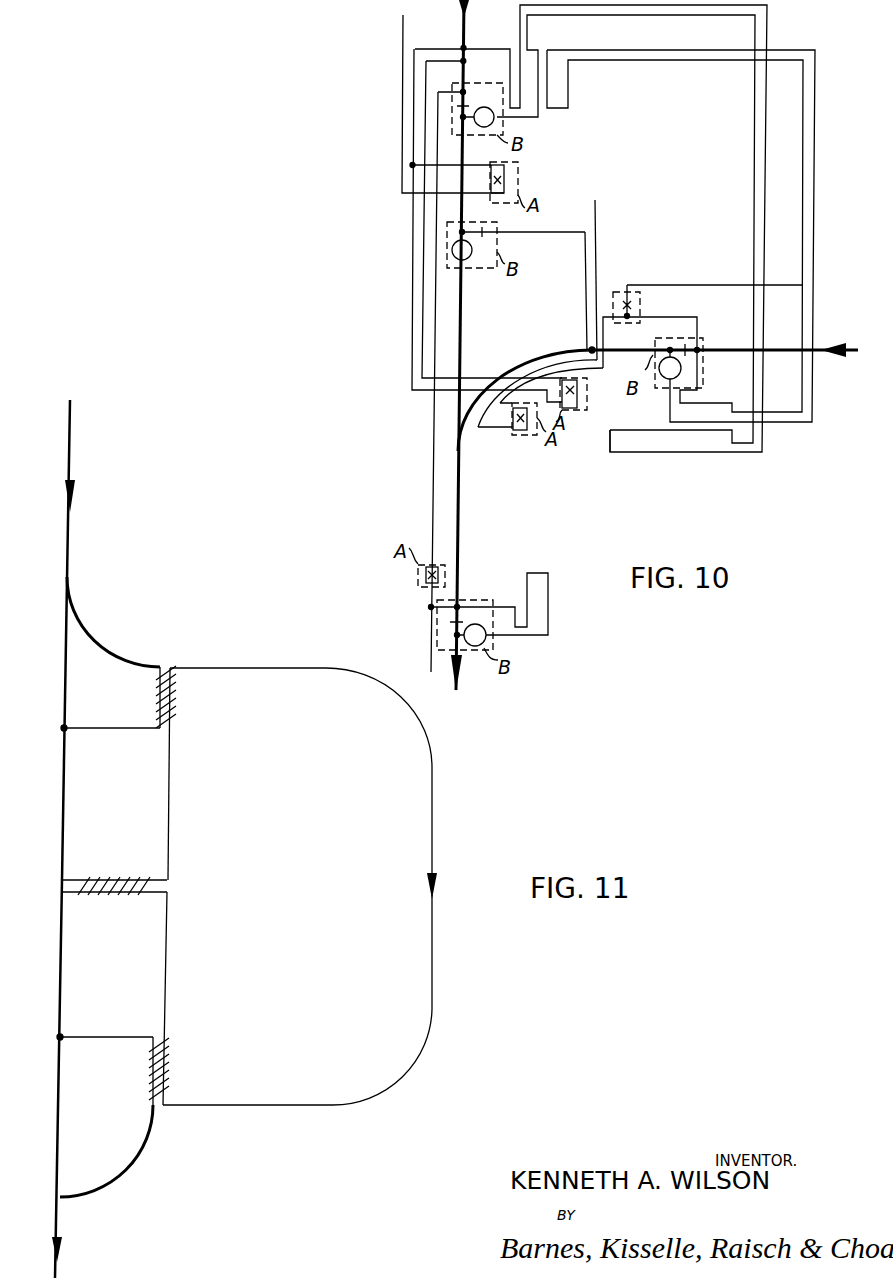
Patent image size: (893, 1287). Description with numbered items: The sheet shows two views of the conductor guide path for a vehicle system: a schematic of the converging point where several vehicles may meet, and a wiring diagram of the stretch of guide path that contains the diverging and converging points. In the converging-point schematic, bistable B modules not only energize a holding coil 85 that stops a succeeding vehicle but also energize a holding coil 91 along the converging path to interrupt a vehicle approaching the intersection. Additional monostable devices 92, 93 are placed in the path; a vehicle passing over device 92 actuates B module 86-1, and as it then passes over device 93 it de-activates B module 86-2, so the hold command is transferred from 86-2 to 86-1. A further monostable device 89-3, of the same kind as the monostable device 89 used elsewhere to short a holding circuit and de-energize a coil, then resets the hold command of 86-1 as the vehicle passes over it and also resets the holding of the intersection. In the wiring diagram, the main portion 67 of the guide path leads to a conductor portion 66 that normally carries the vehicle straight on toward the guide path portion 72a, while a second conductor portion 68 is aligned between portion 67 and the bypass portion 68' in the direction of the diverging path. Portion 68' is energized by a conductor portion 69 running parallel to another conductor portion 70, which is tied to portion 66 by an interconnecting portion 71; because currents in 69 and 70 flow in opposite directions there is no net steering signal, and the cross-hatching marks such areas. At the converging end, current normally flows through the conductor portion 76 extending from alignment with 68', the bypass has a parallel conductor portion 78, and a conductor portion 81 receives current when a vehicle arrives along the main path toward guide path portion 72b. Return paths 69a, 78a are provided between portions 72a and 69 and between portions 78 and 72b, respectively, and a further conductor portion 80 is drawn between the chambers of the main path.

In FIG. 11, the conductor portion 66 is at (65, 670).
In FIG. 11, the main portion of the guide path 67 is at (68, 547).
In FIG. 11, the second conductor portion 68 is at (113, 622).
In FIG. 11, the bypass conductor portion 68' is at (300, 886).
In FIG. 11, the conductor portion 69 is at (168, 698).
In FIG. 11, the return path 69a is at (100, 880).
In FIG. 11, the conductor portion 70 is at (157, 700).
In FIG. 11, the interconnecting portion 71 is at (107, 730).
In FIG. 11, the guide path portion 72a is at (62, 778).
In FIG. 11, the guide path portion 72b is at (62, 930).
In FIG. 11, the guide path conductor portion 76 is at (103, 1127).
In FIG. 11, the conductor portion 78 is at (168, 1063).
In FIG. 11, the return path 78a is at (100, 892).
In FIG. 11, the partition 80 is at (100, 1037).
In FIG. 11, the conductor portion 81 is at (58, 1093).
In FIG. 10, the holding coil 85 is at (538, 117).
In FIG. 10, the B module 86-1 is at (500, 130).
In FIG. 10, the B module 86-2 is at (700, 337).
In FIG. 10, the monostable device 89 is at (518, 177).
In FIG. 10, the monostable device 89-3 is at (424, 584).
In FIG. 10, the holding coil 91 is at (657, 453).
In FIG. 10, the monostable device 92 is at (580, 409).
In FIG. 10, the monostable device 93 is at (520, 434).